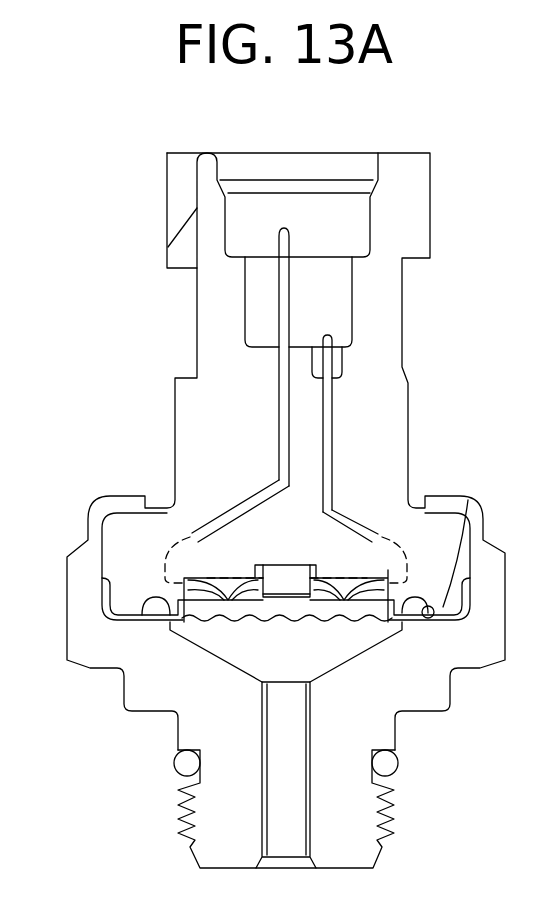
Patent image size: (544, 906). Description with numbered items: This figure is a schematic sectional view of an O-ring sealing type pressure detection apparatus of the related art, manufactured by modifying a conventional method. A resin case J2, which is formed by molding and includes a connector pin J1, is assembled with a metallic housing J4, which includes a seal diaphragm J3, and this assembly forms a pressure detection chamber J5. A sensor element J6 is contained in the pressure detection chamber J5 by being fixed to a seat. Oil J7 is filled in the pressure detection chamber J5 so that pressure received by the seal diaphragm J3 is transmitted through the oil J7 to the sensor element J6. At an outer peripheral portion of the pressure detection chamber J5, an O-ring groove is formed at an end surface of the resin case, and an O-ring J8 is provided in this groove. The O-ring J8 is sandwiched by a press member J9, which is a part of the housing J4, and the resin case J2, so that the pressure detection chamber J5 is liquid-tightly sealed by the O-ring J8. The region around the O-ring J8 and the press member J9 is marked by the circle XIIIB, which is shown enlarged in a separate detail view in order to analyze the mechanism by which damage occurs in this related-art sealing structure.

The connector pin J1 is at (278, 418).
The resin case J2 is at (390, 425).
The seal diaphragm J3 is at (342, 622).
The housing J4 is at (170, 677).
The pressure detection chamber J5 is at (293, 612).
The sensor element J6 is at (277, 575).
The oil J7 is at (342, 718).
The O-ring J8 is at (157, 605).
The press member J9 is at (130, 613).
The circle XIIIB is at (430, 613).